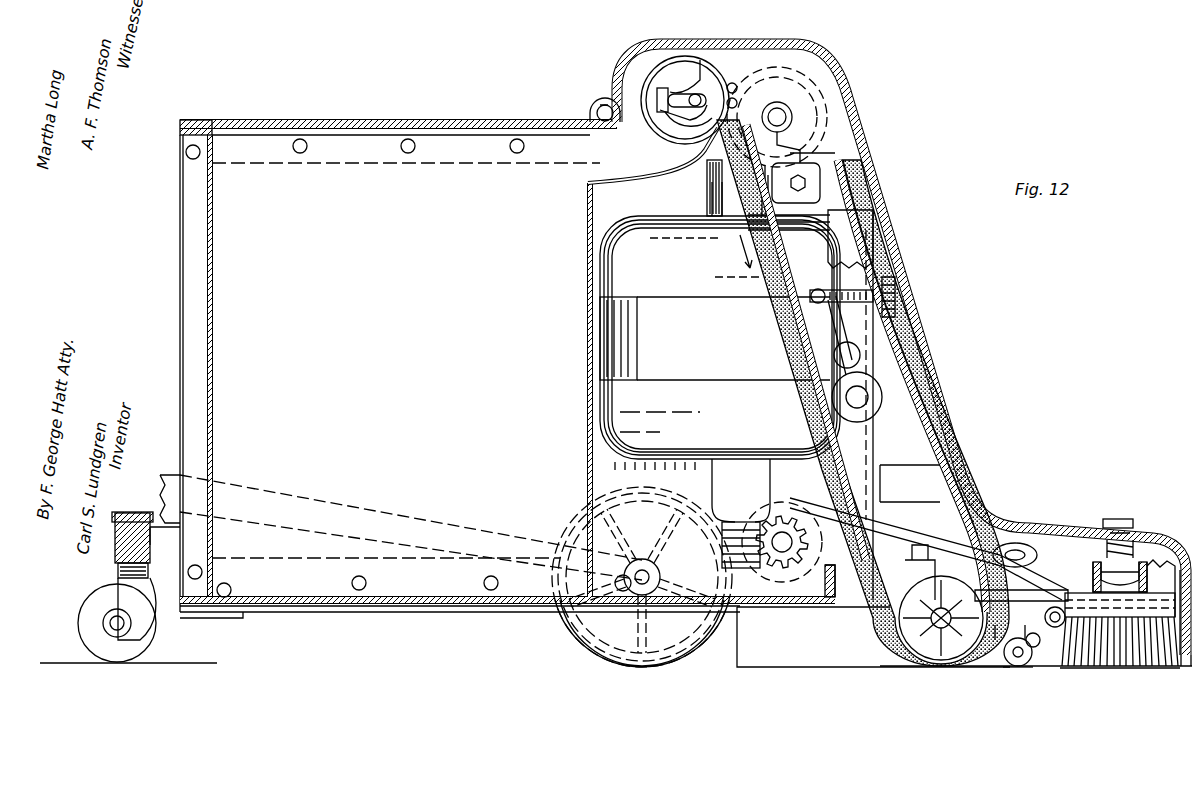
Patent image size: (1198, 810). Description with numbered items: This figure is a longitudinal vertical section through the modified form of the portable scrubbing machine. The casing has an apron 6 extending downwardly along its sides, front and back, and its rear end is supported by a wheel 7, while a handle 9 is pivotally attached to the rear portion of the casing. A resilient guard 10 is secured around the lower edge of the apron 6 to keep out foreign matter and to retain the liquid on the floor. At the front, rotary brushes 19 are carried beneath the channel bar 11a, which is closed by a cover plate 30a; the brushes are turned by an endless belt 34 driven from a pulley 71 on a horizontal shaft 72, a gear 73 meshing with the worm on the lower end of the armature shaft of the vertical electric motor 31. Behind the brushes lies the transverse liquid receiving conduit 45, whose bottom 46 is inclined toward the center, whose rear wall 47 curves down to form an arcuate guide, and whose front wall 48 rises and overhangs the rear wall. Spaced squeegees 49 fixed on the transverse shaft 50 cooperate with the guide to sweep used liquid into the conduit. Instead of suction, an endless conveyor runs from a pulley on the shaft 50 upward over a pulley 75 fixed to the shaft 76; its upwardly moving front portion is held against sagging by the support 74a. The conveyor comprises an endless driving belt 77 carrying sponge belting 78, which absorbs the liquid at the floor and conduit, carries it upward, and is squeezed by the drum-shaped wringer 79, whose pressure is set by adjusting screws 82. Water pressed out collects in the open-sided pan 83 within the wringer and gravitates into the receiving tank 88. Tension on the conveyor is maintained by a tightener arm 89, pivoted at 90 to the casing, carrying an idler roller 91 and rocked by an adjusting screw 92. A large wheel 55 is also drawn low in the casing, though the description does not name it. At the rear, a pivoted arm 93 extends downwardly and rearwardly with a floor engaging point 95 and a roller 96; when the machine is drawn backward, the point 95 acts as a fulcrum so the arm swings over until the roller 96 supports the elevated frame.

The apron 6 is at (1147, 533).
The wheel 7 is at (118, 664).
The handle 9 is at (340, 506).
The resilient guard 10 is at (1160, 660).
The channel bar 11a is at (1148, 560).
The rotary brush 19 is at (1135, 668).
The cover plate 30a is at (1127, 527).
The electric motor 31 is at (600, 363).
The endless belt 34 is at (1175, 580).
The liquid receiving conduit 45 is at (1000, 657).
The bottom of the conduit 46 is at (1003, 657).
The rear wall of the conduit 47 is at (963, 667).
The front wall of the conduit 48 is at (977, 537).
The squeegee 49 is at (940, 627).
The transverse shaft 50 is at (930, 640).
The drive wheel 55 is at (743, 570).
The pulley 71 is at (753, 587).
The horizontal shaft 72 is at (783, 553).
The gear 73 is at (793, 570).
The support 74a is at (897, 343).
The pulley 75 is at (802, 90).
The shaft 76 is at (792, 113).
The endless driving belt 77 is at (963, 445).
The sponge belting 78 is at (735, 181).
The wringer 79 is at (680, 50).
The adjusting screw 82 is at (624, 92).
The open-sided pan 83 is at (686, 132).
The receiving tank 88 is at (507, 369).
The arm 89 is at (830, 316).
The pivot 90 is at (850, 354).
The idler roller 91 is at (840, 432).
The adjusting screw 92 is at (852, 290).
The arm 93 is at (1030, 652).
The floor engaging point 95 is at (1018, 665).
The roller 96 is at (1020, 665).